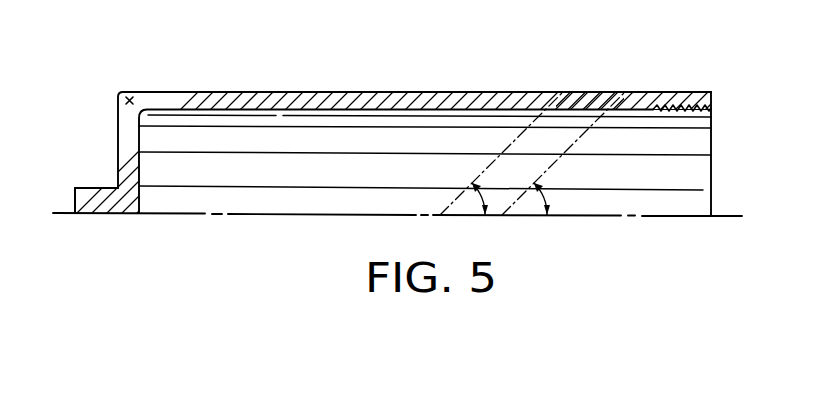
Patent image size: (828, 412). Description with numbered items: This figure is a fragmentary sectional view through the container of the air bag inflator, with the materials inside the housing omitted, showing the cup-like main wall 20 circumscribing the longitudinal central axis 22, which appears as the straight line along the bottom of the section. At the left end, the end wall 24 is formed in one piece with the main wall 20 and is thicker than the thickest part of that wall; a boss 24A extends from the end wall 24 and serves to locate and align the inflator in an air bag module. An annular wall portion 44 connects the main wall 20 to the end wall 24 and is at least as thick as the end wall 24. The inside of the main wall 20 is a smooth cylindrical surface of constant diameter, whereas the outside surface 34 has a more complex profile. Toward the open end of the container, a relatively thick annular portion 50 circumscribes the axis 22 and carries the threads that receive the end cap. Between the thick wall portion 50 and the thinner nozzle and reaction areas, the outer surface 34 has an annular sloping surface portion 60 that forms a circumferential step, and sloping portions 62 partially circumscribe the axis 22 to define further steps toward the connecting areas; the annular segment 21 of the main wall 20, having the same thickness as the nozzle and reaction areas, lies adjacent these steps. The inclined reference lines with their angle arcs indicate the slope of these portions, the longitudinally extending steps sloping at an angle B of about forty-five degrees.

The main wall 20 is at (383, 105).
The annular segment 21 is at (587, 92).
The longitudinal central axis 22 is at (231, 217).
The end wall 24 is at (113, 127).
The boss 24A is at (74, 201).
The outside surface 34 is at (272, 92).
The annular wall portion 44 is at (127, 92).
The annular portion 50 is at (673, 92).
The sloping surface portion 60 is at (622, 92).
The sloping portions 62 is at (560, 92).
The angle B is at (482, 195).